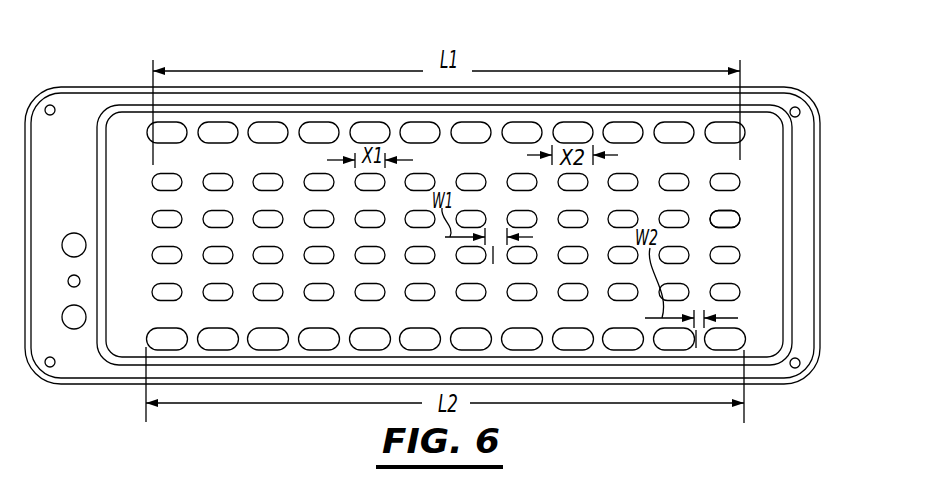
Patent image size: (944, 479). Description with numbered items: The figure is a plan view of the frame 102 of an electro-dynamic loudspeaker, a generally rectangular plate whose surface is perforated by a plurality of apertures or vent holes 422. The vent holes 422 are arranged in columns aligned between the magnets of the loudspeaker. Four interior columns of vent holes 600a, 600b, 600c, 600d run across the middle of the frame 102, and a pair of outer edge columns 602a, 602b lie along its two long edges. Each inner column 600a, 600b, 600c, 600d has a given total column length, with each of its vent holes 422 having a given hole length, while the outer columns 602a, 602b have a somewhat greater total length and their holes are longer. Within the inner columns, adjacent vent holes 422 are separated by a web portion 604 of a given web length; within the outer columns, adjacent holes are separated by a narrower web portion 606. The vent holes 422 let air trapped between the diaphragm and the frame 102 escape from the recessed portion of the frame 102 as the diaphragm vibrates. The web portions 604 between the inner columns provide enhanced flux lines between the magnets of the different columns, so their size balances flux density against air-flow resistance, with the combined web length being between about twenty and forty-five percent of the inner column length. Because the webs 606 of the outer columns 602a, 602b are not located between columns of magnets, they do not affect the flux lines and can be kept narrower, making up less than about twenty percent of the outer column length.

The frame 102 is at (811, 100).
The vent holes 422 is at (728, 220).
The interior column of vent holes 600a is at (136, 178).
The interior column of vent holes 600b is at (762, 222).
The interior column of vent holes 600c is at (760, 258).
The interior column of vent holes 600d is at (760, 297).
The outer edge column of vent holes 602a is at (130, 122).
The outer edge column of vent holes 602b is at (769, 334).
The web portion 604 is at (498, 257).
The web portion 606 is at (700, 347).